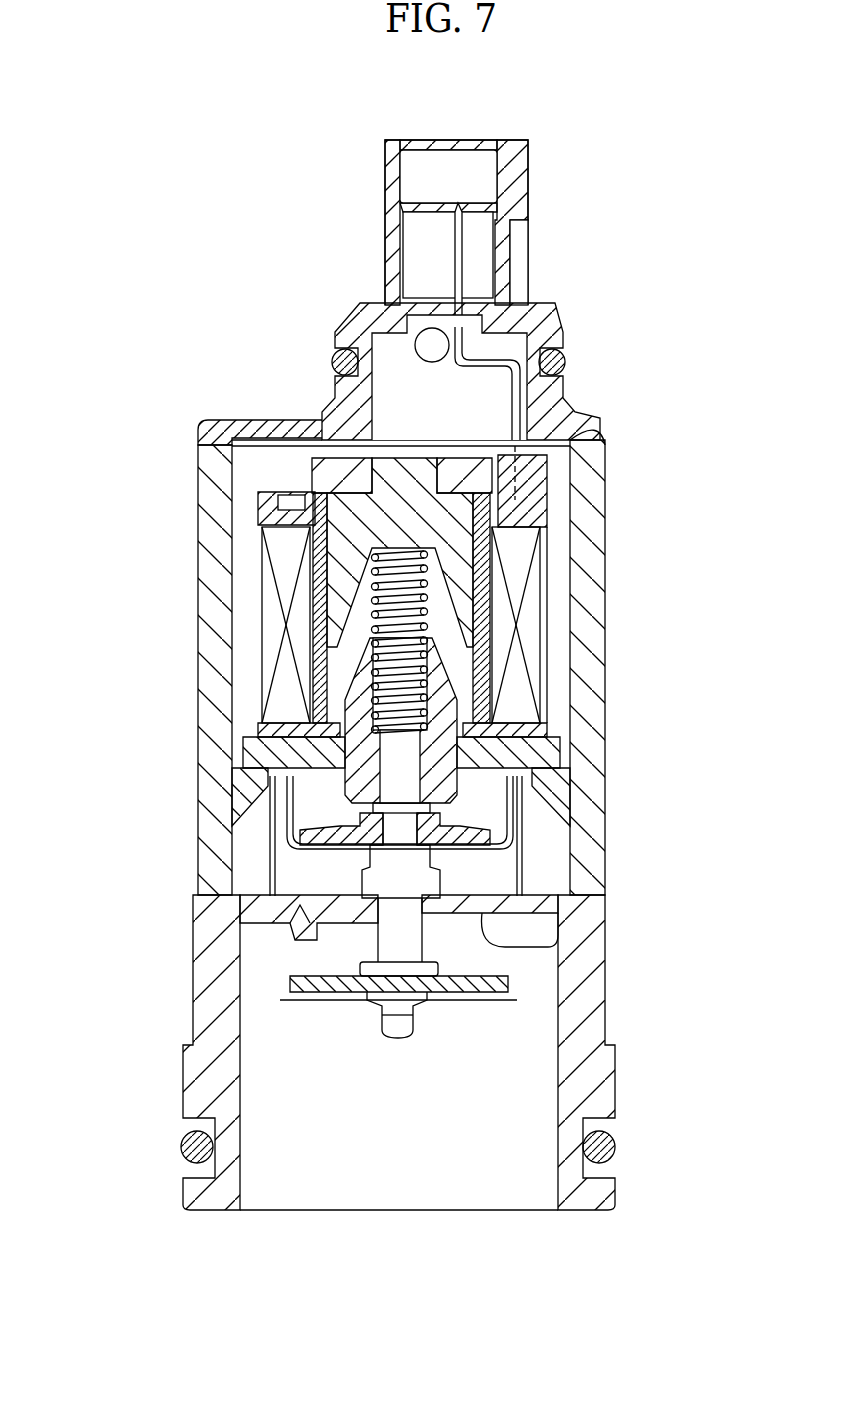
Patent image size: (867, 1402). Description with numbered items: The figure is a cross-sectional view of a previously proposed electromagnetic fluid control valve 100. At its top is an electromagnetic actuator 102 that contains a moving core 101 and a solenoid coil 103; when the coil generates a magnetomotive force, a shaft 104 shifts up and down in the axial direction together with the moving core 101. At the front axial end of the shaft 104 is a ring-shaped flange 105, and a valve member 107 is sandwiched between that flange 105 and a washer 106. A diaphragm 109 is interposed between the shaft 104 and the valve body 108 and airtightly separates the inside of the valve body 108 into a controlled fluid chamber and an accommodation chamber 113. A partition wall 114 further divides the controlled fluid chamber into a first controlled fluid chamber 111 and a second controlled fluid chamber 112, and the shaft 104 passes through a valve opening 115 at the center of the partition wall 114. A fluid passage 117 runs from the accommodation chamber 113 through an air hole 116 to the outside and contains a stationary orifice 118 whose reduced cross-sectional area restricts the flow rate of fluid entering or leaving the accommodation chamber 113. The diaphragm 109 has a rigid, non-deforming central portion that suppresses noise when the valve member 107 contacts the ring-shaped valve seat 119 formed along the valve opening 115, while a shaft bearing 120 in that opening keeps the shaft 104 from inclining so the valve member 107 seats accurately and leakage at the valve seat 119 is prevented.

The electromagnetic fluid control valve 100 is at (133, 1085).
The moving core 101 is at (445, 735).
The electromagnetic actuator 102 is at (162, 378).
The solenoid coil 103 is at (530, 623).
The shaft 104 is at (425, 857).
The ring-shaped flange 105 is at (432, 965).
The washer 106 is at (505, 1003).
The valve member 107 is at (505, 988).
The valve body 108 is at (212, 775).
The diaphragm 109 is at (337, 848).
The first controlled fluid chamber 111 is at (215, 832).
The second controlled fluid chamber 112 is at (428, 1195).
The accommodation chamber 113 is at (470, 665).
The partition wall 114 is at (285, 912).
The valve opening 115 is at (343, 905).
The air hole 116 is at (270, 421).
The fluid passage 117 is at (245, 633).
The stationary orifice 118 is at (290, 740).
The ring-shaped valve seat 119 is at (492, 940).
The shaft bearing 120 is at (427, 900).